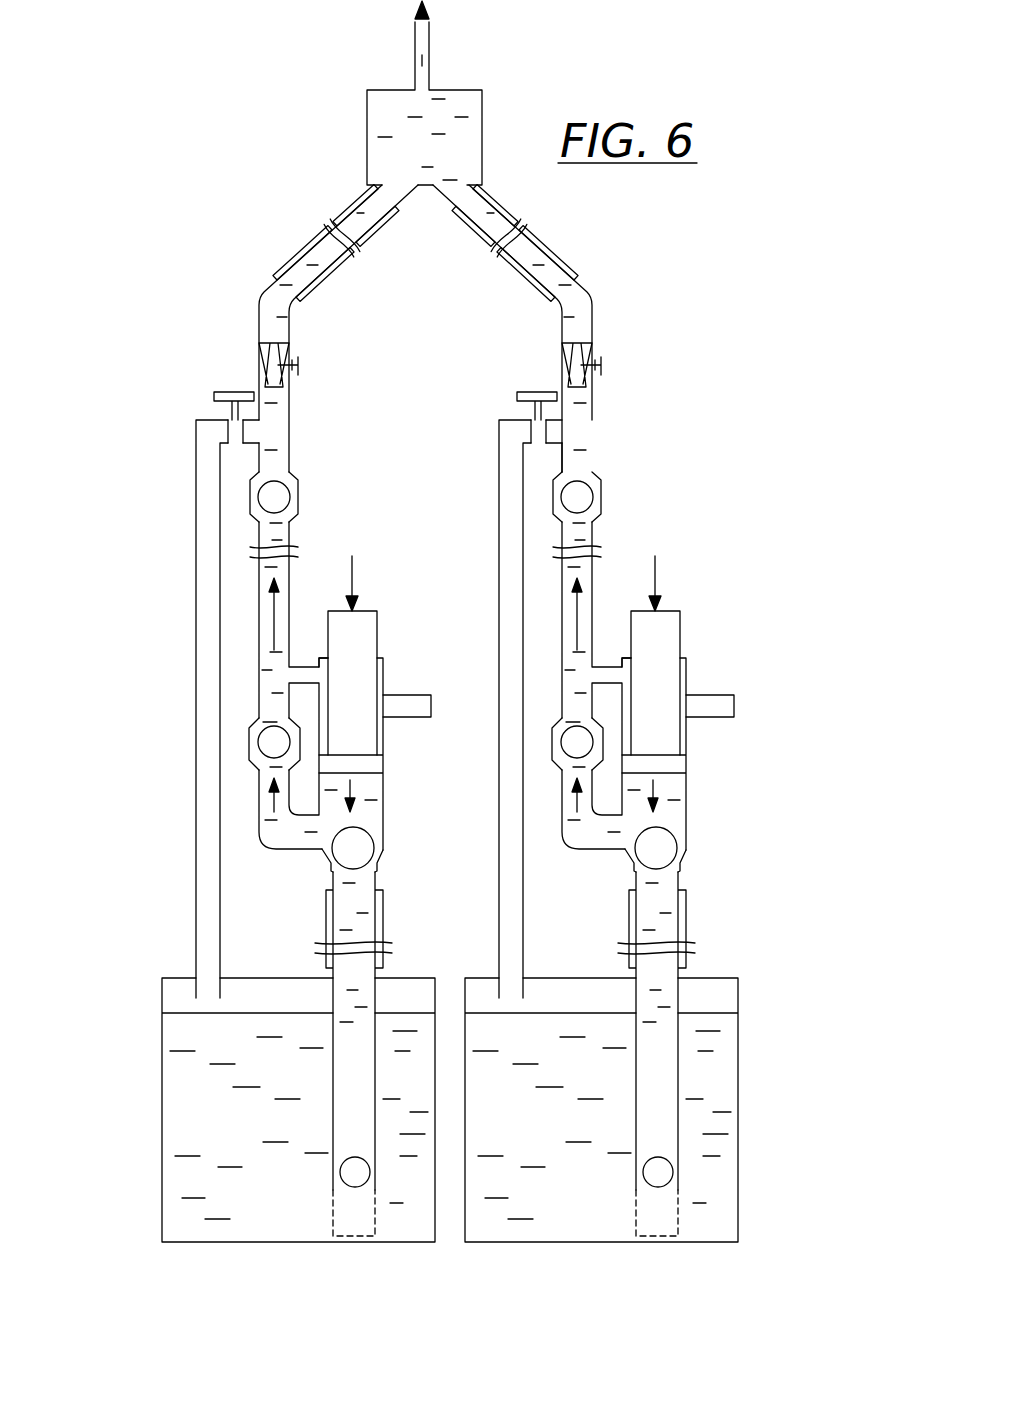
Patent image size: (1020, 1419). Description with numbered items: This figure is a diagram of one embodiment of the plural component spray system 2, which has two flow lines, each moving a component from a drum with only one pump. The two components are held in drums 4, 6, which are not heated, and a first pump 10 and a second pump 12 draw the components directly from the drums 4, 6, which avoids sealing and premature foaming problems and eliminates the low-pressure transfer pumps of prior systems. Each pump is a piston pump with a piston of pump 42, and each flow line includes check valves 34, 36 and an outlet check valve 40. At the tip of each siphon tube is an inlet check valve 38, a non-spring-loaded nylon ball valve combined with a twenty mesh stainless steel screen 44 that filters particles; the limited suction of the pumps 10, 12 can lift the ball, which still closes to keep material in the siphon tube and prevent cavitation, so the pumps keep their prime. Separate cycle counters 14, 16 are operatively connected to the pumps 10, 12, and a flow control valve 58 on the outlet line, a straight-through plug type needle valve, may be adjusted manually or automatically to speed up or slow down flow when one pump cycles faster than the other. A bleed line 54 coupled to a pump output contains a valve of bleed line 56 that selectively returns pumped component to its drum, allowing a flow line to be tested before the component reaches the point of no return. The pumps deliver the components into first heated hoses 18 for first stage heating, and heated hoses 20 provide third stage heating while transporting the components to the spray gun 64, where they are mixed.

The plural component spray system 2 is at (123, 605).
The drum 4 is at (742, 1040).
The drum 6 is at (162, 1049).
The first pump 10 is at (700, 757).
The second pump 12 is at (397, 757).
The cycle counter 14 is at (735, 700).
The cycle counter 16 is at (432, 700).
The first heated hose 18 is at (327, 897).
The heated hose 20 is at (308, 244).
The check valve 34 is at (376, 836).
The check valve 36 is at (257, 733).
The inlet check valve 38 is at (337, 1170).
The outlet check valve 40 is at (287, 488).
The piston of pump 42 is at (374, 620).
The screen 44 is at (377, 1225).
The bleed line 54 is at (195, 901).
The valve of bleed line 56 is at (228, 392).
The flow control valve 58 is at (300, 363).
The spray gun 64 is at (367, 118).